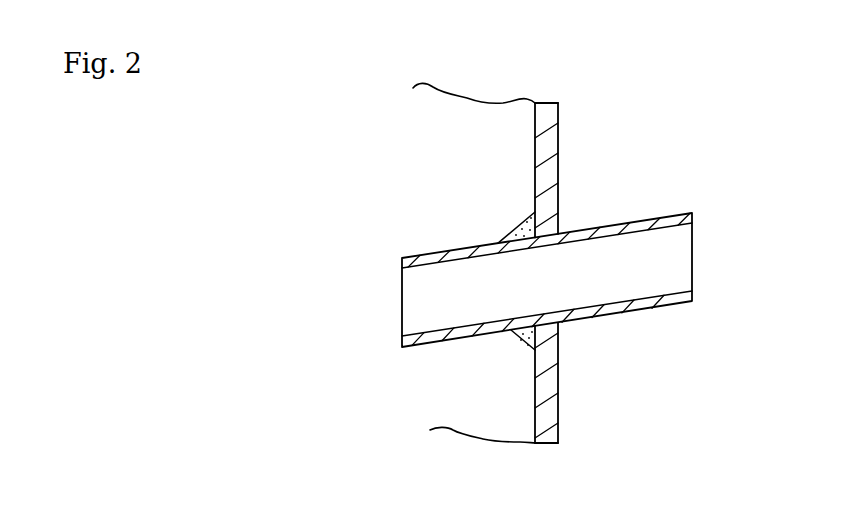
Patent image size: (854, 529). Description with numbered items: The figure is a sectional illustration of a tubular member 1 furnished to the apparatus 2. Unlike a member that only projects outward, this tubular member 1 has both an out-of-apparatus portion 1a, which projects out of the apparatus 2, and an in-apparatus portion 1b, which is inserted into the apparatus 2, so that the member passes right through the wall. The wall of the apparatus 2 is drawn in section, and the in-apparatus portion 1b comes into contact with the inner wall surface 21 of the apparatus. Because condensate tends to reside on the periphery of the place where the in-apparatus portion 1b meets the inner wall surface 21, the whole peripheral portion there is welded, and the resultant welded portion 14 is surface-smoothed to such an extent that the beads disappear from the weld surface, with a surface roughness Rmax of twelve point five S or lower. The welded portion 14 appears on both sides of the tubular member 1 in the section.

The apparatus 2 is at (405, 145).
The inner wall surface of the apparatus 21 is at (558, 125).
The tubular member 1 is at (555, 237).
The out-of-apparatus portion 1a is at (662, 213).
The in-apparatus portion 1b is at (457, 248).
The welded portion 14 is at (520, 220).